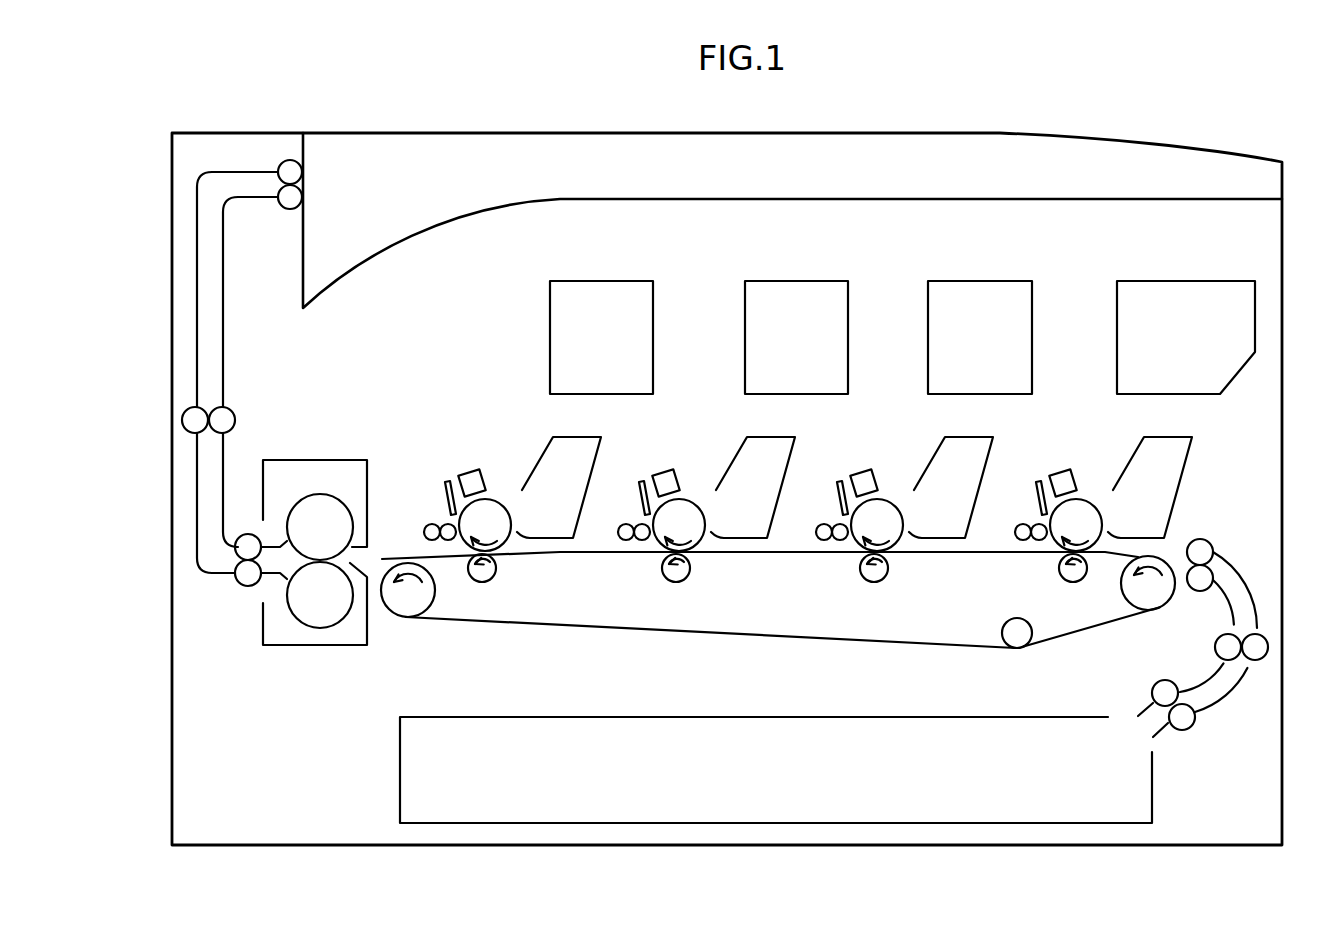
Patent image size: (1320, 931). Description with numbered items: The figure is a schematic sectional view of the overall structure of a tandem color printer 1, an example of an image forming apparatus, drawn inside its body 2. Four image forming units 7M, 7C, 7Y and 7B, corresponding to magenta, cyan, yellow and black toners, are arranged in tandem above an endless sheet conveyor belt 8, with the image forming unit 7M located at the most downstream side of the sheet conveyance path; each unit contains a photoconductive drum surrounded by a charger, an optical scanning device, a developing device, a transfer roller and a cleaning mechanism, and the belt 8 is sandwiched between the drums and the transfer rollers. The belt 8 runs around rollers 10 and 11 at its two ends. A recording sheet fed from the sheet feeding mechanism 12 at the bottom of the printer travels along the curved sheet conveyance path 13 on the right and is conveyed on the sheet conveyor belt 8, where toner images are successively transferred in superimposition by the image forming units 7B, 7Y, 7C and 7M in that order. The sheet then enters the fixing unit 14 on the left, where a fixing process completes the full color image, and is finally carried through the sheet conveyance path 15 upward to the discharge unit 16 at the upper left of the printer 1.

The tandem color printer 1 is at (1193, 123).
The apparatus housing 2 is at (1282, 220).
The image forming unit 7M is at (569, 301).
The image forming unit 7C is at (761, 301).
The image forming unit 7Y is at (944, 301).
The image forming unit 7B is at (1149, 301).
The sheet conveyor belt 8 is at (636, 634).
The drive roller 10 is at (400, 618).
The tension roller 11 is at (1162, 608).
The sheet feeding mechanism 12 is at (772, 716).
The sheet conveyance path 13 is at (1220, 702).
The fixing unit 14 is at (310, 480).
The sheet conveyance path 15 is at (223, 353).
The discharge unit 16 is at (355, 208).